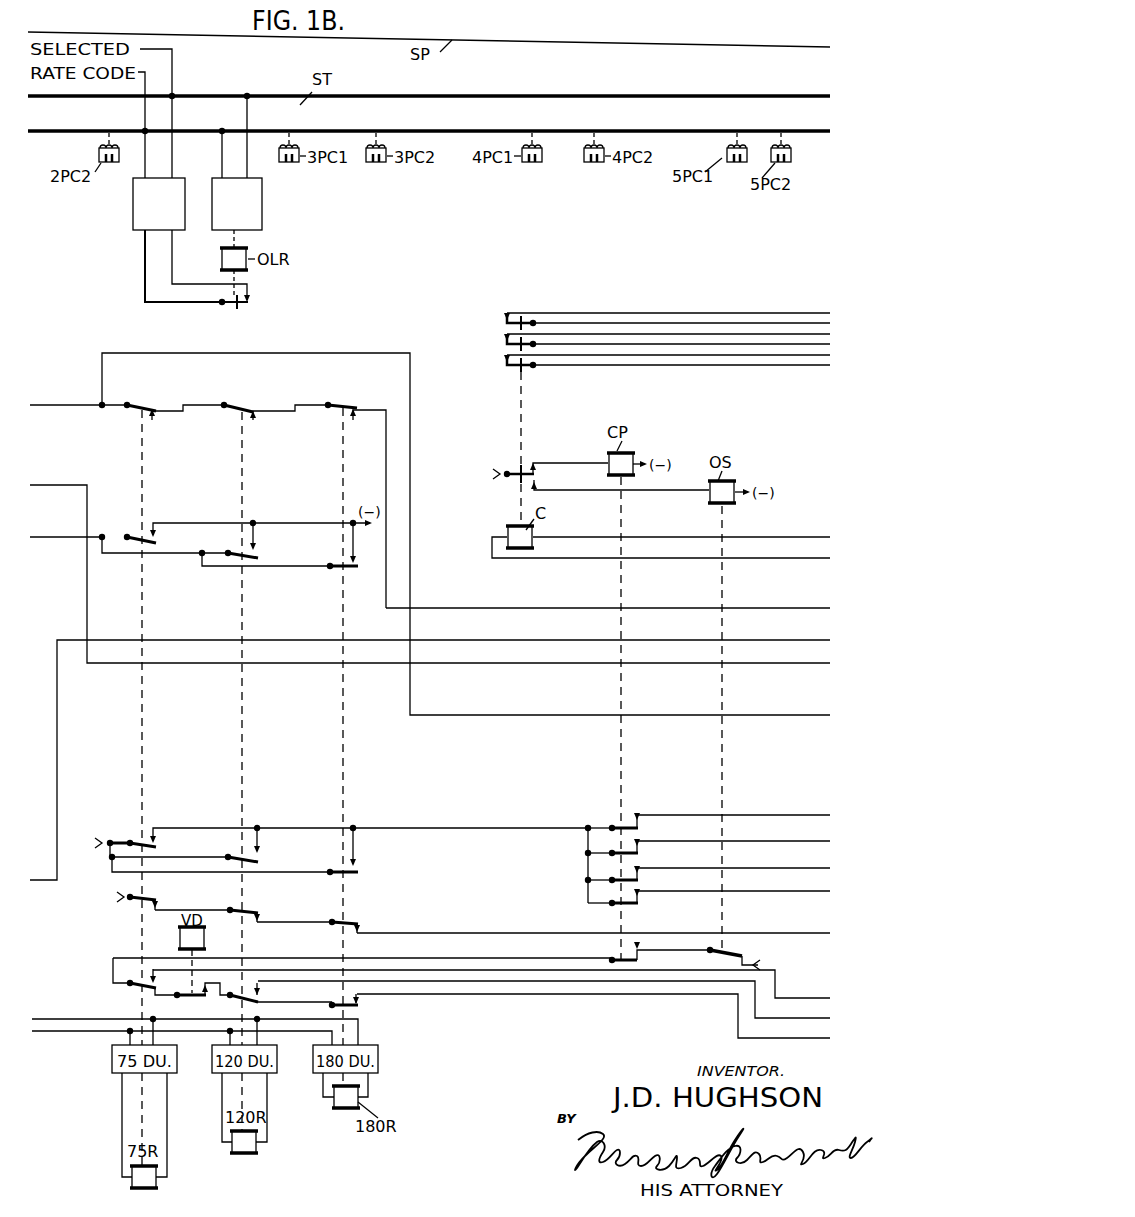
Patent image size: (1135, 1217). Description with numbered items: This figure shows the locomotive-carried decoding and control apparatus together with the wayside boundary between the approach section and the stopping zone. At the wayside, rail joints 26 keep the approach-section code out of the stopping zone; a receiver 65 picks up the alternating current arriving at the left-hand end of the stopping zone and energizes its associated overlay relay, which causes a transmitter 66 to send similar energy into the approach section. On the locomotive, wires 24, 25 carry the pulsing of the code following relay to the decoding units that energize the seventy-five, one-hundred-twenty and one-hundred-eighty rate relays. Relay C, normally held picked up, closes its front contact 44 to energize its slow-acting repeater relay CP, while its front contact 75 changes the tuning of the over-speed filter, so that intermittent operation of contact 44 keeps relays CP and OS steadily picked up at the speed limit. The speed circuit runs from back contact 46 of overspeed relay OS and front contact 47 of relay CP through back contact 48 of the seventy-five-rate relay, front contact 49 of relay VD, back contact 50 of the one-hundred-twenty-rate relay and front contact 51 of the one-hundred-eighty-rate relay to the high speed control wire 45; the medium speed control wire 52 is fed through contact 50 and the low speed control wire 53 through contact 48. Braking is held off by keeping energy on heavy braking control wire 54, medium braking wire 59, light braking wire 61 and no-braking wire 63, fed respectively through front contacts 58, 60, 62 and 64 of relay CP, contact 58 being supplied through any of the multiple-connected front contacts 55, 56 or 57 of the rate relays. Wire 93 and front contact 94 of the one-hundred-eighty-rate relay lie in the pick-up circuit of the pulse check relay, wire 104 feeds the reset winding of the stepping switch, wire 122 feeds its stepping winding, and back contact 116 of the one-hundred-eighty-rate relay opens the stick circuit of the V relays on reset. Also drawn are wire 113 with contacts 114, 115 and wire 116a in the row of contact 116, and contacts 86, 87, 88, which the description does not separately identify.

The rail joints 26 is at (198, 100).
The transmitter 66 is at (133, 200).
The receiver 65 is at (262, 213).
The front contact of relay C 75 is at (515, 368).
The front contact of relay C 44 is at (527, 467).
The wire 113 is at (38, 405).
The contact 114 is at (133, 403).
The contact 115 is at (233, 403).
The back contact of relay 180R 116 is at (333, 403).
The wire 116a is at (815, 610).
The wire 122 is at (38, 485).
The wire 104 is at (58, 787).
The wire 93 is at (33, 539).
The front contact of relay 180R 94 is at (336, 561).
The front contact of relay 75R 55 is at (138, 839).
The front contact of relay 120R 56 is at (238, 858).
The front contact of relay 180R 57 is at (336, 869).
The contact 86 is at (151, 898).
The contact 87 is at (256, 904).
The contact 88 is at (350, 919).
The front contact of relay CP 47 is at (617, 956).
The back contact of overspeed relay OS 46 is at (715, 950).
The contact of relay 75R 48 is at (134, 987).
The front contact of relay VD 49 is at (186, 998).
The contact of relay 120R 50 is at (262, 996).
The front contact of relay 180R 51 is at (358, 1005).
The low speed control wire 53 is at (790, 998).
The medium speed control wire 52 is at (777, 1018).
The high speed control wire 45 is at (775, 1038).
The wire 24 is at (48, 1017).
The wire 25 is at (42, 1033).
The front contact of relay CP 64 is at (620, 826).
The no-braking wire 63 is at (783, 814).
The front contact of relay CP 62 is at (623, 851).
The light braking wire 61 is at (822, 842).
The front contact of relay CP 60 is at (623, 878).
The medium braking wire 59 is at (827, 868).
The front contact of relay CP 58 is at (612, 907).
The heavy braking control wire 54 is at (827, 894).